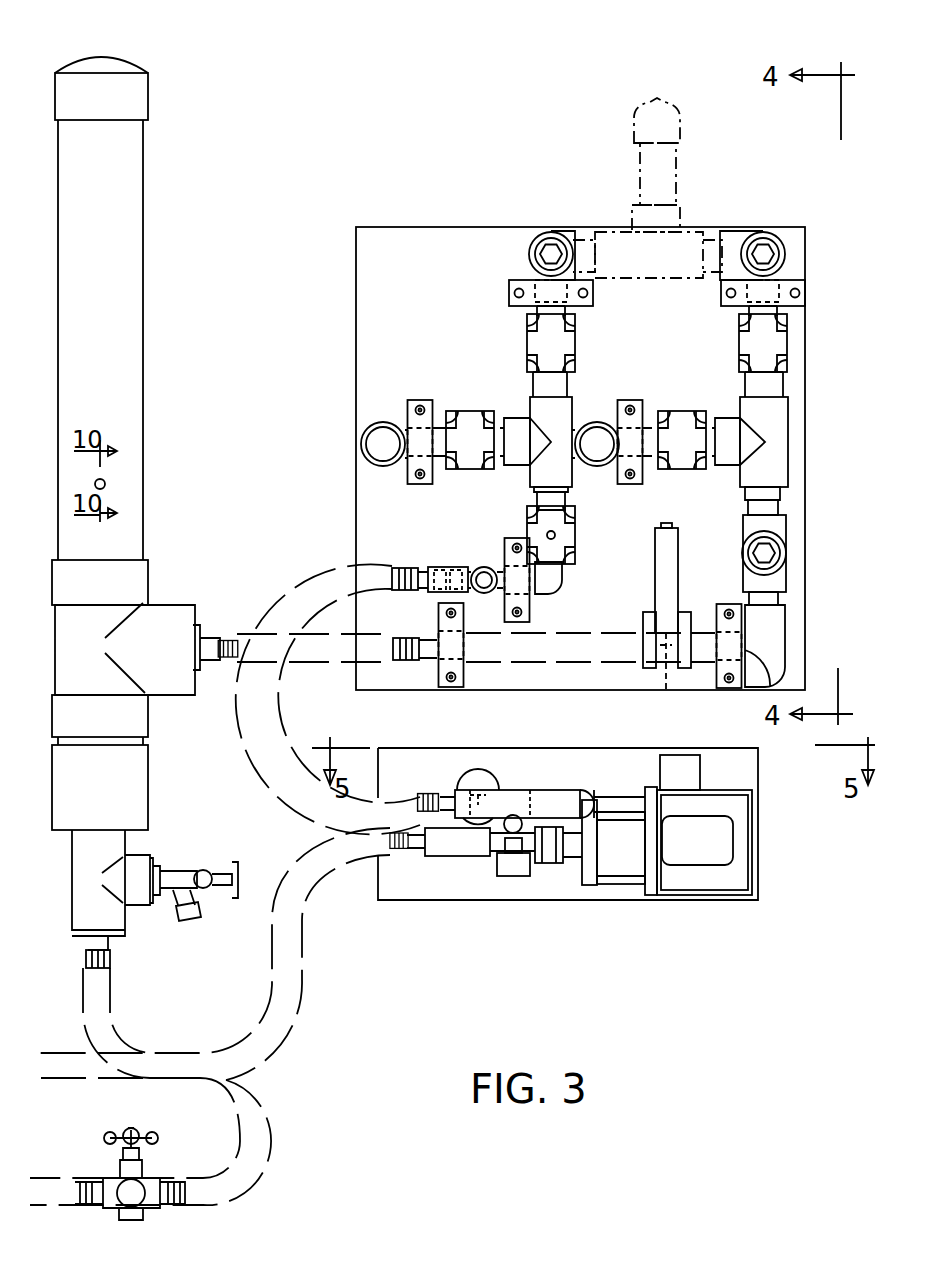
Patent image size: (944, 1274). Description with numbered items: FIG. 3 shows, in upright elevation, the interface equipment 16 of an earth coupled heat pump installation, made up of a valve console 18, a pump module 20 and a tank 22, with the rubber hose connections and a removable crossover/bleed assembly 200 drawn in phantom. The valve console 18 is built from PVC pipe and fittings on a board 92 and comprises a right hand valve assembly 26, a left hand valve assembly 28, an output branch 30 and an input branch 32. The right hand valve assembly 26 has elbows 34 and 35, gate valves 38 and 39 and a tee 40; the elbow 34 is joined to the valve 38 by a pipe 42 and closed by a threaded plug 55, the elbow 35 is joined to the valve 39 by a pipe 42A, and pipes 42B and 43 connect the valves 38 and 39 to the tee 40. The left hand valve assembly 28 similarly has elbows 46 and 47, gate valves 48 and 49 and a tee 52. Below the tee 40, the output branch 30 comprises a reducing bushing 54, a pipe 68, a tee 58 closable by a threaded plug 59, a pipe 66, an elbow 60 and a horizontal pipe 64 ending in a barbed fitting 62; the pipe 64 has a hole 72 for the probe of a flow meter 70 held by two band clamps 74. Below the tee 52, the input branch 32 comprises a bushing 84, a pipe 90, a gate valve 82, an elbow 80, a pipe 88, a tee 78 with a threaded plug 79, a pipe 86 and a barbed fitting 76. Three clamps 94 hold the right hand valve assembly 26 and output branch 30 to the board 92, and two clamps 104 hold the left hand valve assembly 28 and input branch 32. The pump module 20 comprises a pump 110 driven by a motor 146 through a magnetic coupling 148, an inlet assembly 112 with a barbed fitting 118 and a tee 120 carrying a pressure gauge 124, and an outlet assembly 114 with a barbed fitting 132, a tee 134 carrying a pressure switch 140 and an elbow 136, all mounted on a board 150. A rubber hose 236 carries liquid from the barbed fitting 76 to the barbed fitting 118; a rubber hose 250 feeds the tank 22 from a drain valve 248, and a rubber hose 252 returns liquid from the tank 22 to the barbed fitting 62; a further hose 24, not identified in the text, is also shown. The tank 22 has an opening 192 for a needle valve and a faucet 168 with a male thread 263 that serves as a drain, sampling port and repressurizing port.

The interface equipment 16 is at (383, 76).
The valve console 18 is at (410, 220).
The pump module 20 is at (709, 905).
The tank 22 is at (135, 52).
The hose 24 is at (278, 1028).
The right hand valve assembly 26 is at (733, 226).
The left hand valve assembly 28 is at (551, 229).
The output branch 30 is at (790, 648).
The input branch 32 is at (568, 575).
The elbow 34 is at (785, 250).
The elbow 35 is at (590, 428).
The gate valve 38 is at (785, 343).
The gate valve 39 is at (680, 428).
The tee 40 is at (790, 441).
The short length of pipe 42 is at (782, 310).
The short length of pipe 42A is at (648, 400).
The short length of pipe 42B is at (775, 385).
The short length of pipe 43 is at (705, 470).
The elbow 46 is at (530, 250).
The elbow 47 is at (361, 441).
The gate valve 48 is at (528, 330).
The gate valve 49 is at (460, 430).
The tee 52 is at (520, 428).
The reducing bushing 54 is at (785, 490).
The removable threaded plug 55 is at (760, 250).
The tee 58 is at (787, 558).
The removable threaded plug 59 is at (750, 562).
The elbow 60 is at (765, 670).
The barbed fitting 62 is at (500, 690).
The horizontally disposed pipe 64 is at (545, 690).
The short length of pipe 66 is at (780, 598).
The short length of pipe 68 is at (780, 505).
The flow meter 70 is at (680, 590).
The hole 72 is at (665, 680).
The band clamps 74 is at (645, 690).
The barbed fitting 76 is at (410, 568).
The tee 78 is at (450, 565).
The threaded plug 79 is at (484, 574).
The elbow 80 is at (555, 585).
The gate valve 82 is at (575, 525).
The bushing 84 is at (572, 490).
The short length of pipe 86 is at (440, 592).
The short length of pipe 88 is at (540, 596).
The short length of pipe 90 is at (537, 503).
The board 92 is at (356, 296).
The clamps 94 is at (808, 292).
The clamps 104 is at (510, 294).
The pump 110 is at (570, 864).
The inlet assembly 112 is at (457, 860).
The outlet assembly 114 is at (515, 788).
The barbed fitting 118 is at (388, 840).
The tee 120 is at (478, 858).
The pressure gauge 124 is at (478, 770).
The barbed fitting 132 is at (425, 796).
The tee 134 is at (552, 790).
The elbow 136 is at (645, 800).
The pressure switch 140 is at (517, 862).
The motor 146 is at (740, 880).
The magnetic coupling 148 is at (617, 865).
The board 150 is at (750, 768).
The faucet 168 is at (172, 870).
The opening 192 is at (105, 480).
The cross-over/bleed assembly 200 is at (628, 117).
The rubber hose 236 is at (245, 732).
The drain valve 248 is at (140, 1165).
The rubber hose 250 is at (265, 1100).
The rubber hose 252 is at (300, 665).
The male thread 263 is at (240, 915).